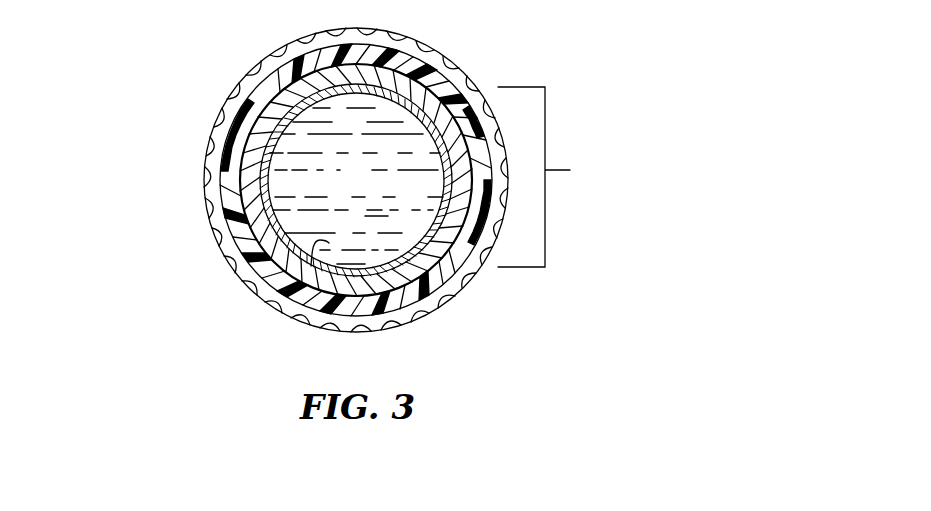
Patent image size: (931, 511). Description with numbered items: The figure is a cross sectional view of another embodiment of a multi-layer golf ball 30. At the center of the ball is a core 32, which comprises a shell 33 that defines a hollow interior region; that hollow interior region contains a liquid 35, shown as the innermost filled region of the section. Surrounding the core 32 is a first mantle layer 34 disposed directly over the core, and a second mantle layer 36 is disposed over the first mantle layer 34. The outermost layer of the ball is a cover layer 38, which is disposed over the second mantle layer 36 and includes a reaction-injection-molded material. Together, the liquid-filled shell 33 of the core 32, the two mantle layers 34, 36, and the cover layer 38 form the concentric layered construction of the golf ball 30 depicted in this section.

The golf ball 30 is at (168, 88).
The core 32 is at (552, 177).
The shell 33 is at (428, 290).
The first mantle layer 34 is at (433, 67).
The liquid 35 is at (297, 305).
The second mantle layer 36 is at (233, 265).
The cover layer 38 is at (205, 197).